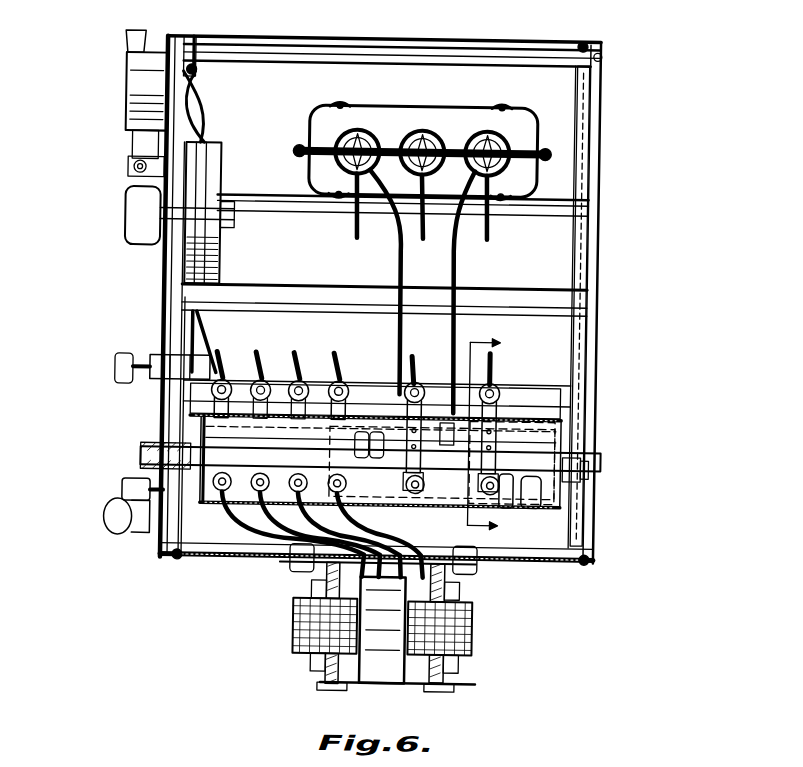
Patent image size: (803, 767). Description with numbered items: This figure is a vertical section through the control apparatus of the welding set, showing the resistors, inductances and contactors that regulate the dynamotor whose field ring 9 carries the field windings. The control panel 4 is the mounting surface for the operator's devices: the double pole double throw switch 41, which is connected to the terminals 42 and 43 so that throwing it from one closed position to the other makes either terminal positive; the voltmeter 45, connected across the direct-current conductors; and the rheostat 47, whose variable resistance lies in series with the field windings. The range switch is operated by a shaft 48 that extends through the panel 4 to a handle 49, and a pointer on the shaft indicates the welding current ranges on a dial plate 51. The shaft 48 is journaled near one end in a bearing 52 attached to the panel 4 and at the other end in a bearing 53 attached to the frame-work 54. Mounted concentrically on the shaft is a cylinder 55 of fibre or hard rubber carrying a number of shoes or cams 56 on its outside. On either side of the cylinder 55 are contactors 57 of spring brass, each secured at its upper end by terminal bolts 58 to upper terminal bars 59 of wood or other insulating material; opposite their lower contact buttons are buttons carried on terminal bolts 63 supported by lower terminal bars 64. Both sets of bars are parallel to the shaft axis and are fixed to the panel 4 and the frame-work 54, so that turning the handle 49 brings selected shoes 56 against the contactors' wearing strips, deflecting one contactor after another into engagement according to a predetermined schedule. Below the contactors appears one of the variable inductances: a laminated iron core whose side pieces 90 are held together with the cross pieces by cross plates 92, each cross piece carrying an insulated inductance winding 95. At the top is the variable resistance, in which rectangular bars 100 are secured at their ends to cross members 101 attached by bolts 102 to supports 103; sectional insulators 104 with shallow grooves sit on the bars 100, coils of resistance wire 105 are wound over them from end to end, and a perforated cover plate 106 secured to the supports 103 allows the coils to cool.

The control panel 4 is at (166, 324).
The field ring 9 is at (499, 434).
The double pole double throw switch 41 is at (124, 173).
The terminal 42 is at (123, 491).
The terminal 43 is at (127, 359).
The voltmeter 45 is at (120, 81).
The rheostat 47 is at (122, 215).
The shaft 48 is at (142, 461).
The handle 49 is at (110, 527).
The dial plate 51 is at (192, 415).
The bearing 52 is at (198, 442).
The bearing 53 is at (582, 444).
The frame-work 54 is at (578, 342).
The cylinder 55 is at (547, 420).
The shoes 56 is at (557, 512).
The contactors 57 is at (313, 379).
The terminal bolts 58 is at (273, 382).
The upper terminal bars 59 is at (431, 380).
The terminal bolts 63 is at (242, 546).
The lower terminal bars 64 is at (566, 496).
The side pieces 90 is at (479, 634).
The cross plates 92 is at (476, 660).
The inductance winding 95 is at (396, 666).
The rectangular bars 100 is at (351, 138).
The cross members 101 is at (309, 140).
The bolts 102 is at (295, 154).
The supports 103 is at (315, 114).
The sectional insulators 104 is at (425, 131).
The coils of resistance wire 105 is at (503, 130).
The cover plate 106 is at (407, 114).